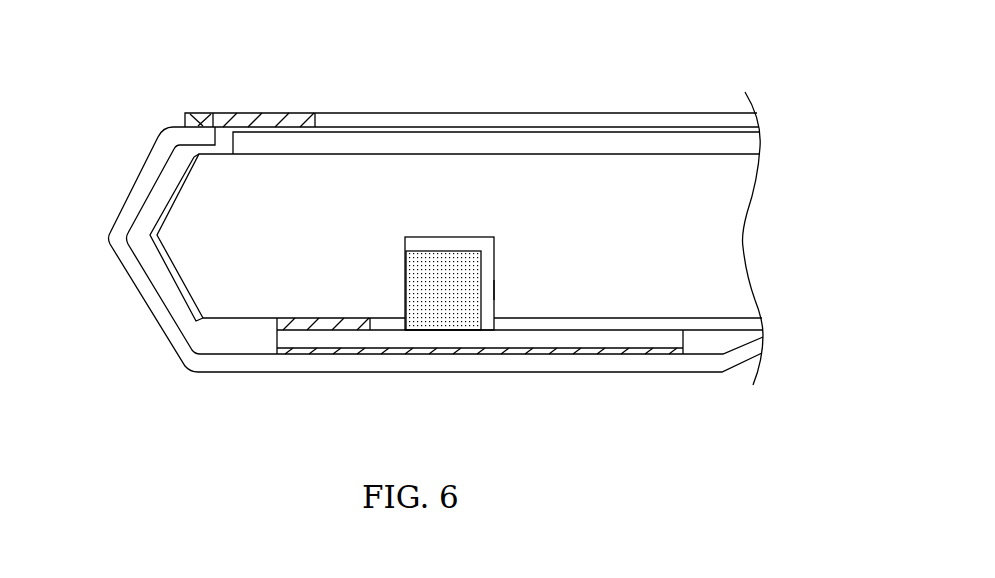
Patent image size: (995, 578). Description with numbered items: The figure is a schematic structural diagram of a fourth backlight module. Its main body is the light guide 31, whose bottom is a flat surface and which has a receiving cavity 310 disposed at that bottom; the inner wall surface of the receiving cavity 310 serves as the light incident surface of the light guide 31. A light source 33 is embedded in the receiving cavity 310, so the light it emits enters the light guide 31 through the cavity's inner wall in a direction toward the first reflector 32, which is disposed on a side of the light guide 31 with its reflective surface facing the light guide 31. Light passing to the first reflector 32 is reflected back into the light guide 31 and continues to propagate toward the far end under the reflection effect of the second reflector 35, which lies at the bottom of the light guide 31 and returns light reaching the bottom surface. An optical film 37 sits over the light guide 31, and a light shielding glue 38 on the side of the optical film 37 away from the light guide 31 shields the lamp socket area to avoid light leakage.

The light guide 31 is at (380, 188).
The first reflector 32 is at (182, 287).
The light source 33 is at (427, 313).
The second reflector 35 is at (632, 323).
The optical film 37 is at (558, 143).
The light shielding glue 38 is at (207, 123).
The receiving cavity 310 is at (495, 290).